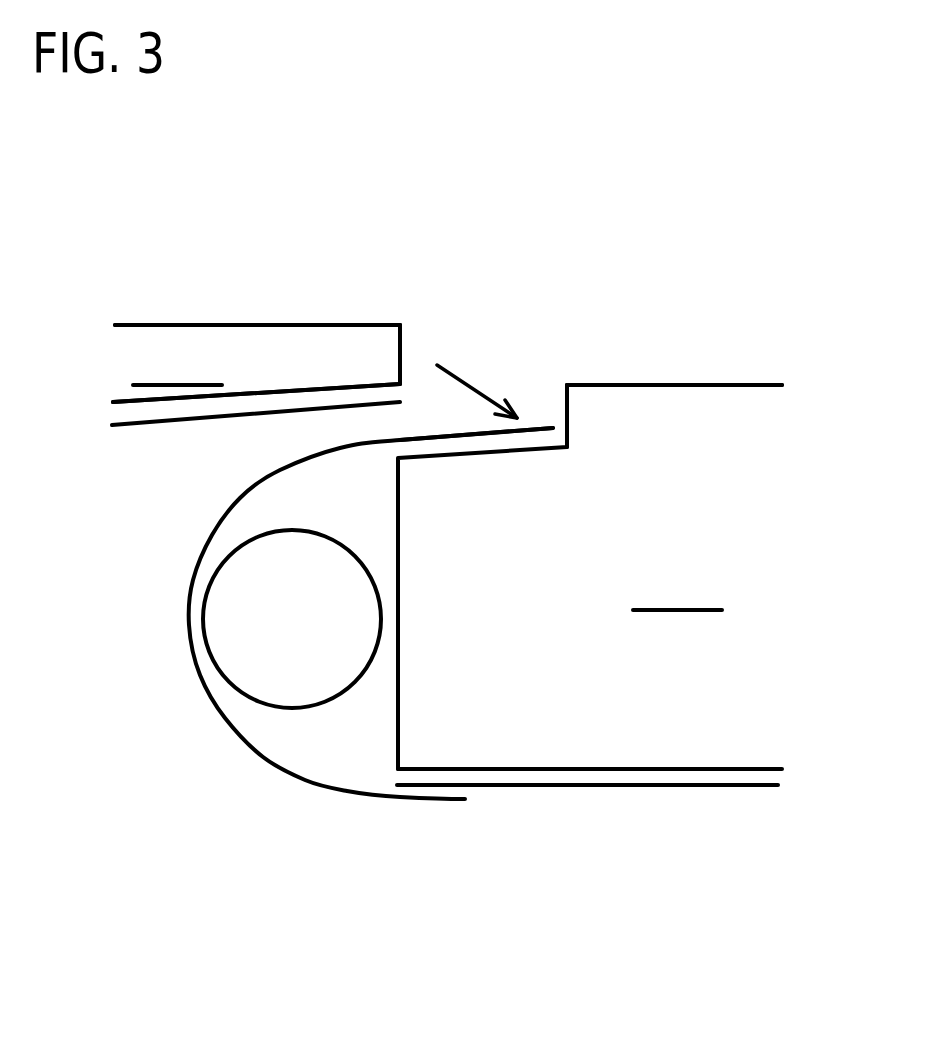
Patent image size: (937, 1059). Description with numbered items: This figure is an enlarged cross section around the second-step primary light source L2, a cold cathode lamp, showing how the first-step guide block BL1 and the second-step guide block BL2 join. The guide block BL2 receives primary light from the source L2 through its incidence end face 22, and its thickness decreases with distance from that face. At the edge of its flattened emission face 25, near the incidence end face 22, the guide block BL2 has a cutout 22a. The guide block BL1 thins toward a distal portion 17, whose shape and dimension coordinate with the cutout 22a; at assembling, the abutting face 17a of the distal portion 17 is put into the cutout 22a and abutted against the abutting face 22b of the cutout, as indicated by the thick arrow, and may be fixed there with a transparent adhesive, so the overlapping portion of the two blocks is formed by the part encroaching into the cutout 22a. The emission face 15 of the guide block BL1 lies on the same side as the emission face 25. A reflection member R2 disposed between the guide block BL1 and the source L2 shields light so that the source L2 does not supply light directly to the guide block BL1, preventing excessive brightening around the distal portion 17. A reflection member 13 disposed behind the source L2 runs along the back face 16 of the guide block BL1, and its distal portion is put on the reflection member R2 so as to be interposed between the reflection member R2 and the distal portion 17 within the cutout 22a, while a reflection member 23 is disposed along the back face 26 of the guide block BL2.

The reflection member 13 is at (127, 425).
The emission face 15 is at (338, 325).
The back face 16 is at (165, 405).
The distal portion 17 is at (255, 328).
The abutting face 17a is at (412, 337).
The incidence end face 22 is at (393, 718).
The cutout 22a is at (535, 410).
The abutting face 22b is at (562, 400).
The reflection member 23 is at (638, 787).
The emission face 25 is at (697, 385).
The back face 26 is at (725, 772).
The primary light source L2 is at (323, 642).
The reflection member R2 is at (263, 757).
The first-step guide block BL1 is at (177, 361).
The second-step guide block BL2 is at (677, 583).